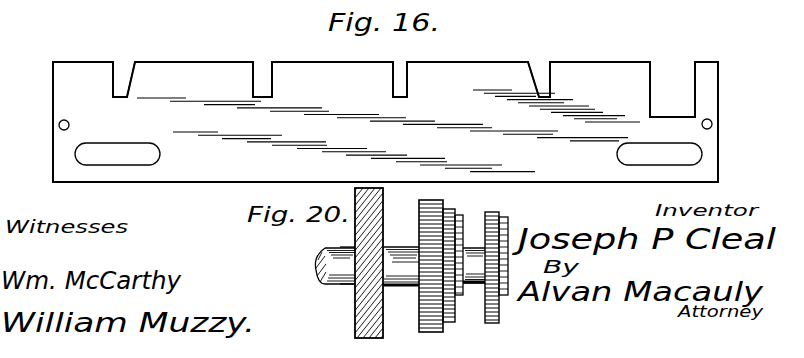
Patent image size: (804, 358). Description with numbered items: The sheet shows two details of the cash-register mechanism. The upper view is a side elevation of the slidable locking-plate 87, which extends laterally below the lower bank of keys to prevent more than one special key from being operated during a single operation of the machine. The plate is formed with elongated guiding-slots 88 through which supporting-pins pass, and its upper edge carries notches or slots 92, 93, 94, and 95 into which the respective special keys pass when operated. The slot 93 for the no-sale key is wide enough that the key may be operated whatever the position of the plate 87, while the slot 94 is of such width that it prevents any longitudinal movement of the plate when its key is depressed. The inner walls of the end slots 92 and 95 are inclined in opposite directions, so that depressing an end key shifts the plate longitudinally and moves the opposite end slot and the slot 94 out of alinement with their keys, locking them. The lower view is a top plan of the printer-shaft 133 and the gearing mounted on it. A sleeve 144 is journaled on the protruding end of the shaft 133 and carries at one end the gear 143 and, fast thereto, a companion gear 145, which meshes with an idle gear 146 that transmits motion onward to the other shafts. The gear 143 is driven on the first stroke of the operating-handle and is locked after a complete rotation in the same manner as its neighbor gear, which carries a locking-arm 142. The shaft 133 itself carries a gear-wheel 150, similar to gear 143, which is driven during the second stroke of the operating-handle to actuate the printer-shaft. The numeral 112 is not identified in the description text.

In FIG. 16, the slidable locking-plate 87 is at (385, 122).
In FIG. 16, the elongated guiding-slots 88 is at (663, 138).
In FIG. 16, the notch or slot 92 is at (120, 66).
In FIG. 16, the notch or slot 93 is at (258, 67).
In FIG. 16, the notch or slot 94 is at (401, 66).
In FIG. 16, the notch or slot 95 is at (541, 66).
In FIG. 20, the printer-shaft 133 is at (323, 263).
In FIG. 20, the companion gear 145 is at (355, 247).
In FIG. 20, the sleeve 144 is at (352, 289).
In FIG. 20, the idle gear 146 is at (369, 263).
In FIG. 20, the locking-arm 142 is at (433, 204).
In FIG. 20, the gear 143 is at (449, 210).
In FIG. 20, the pinion 112 is at (488, 288).
In FIG. 20, the gear-wheel 150 is at (497, 211).